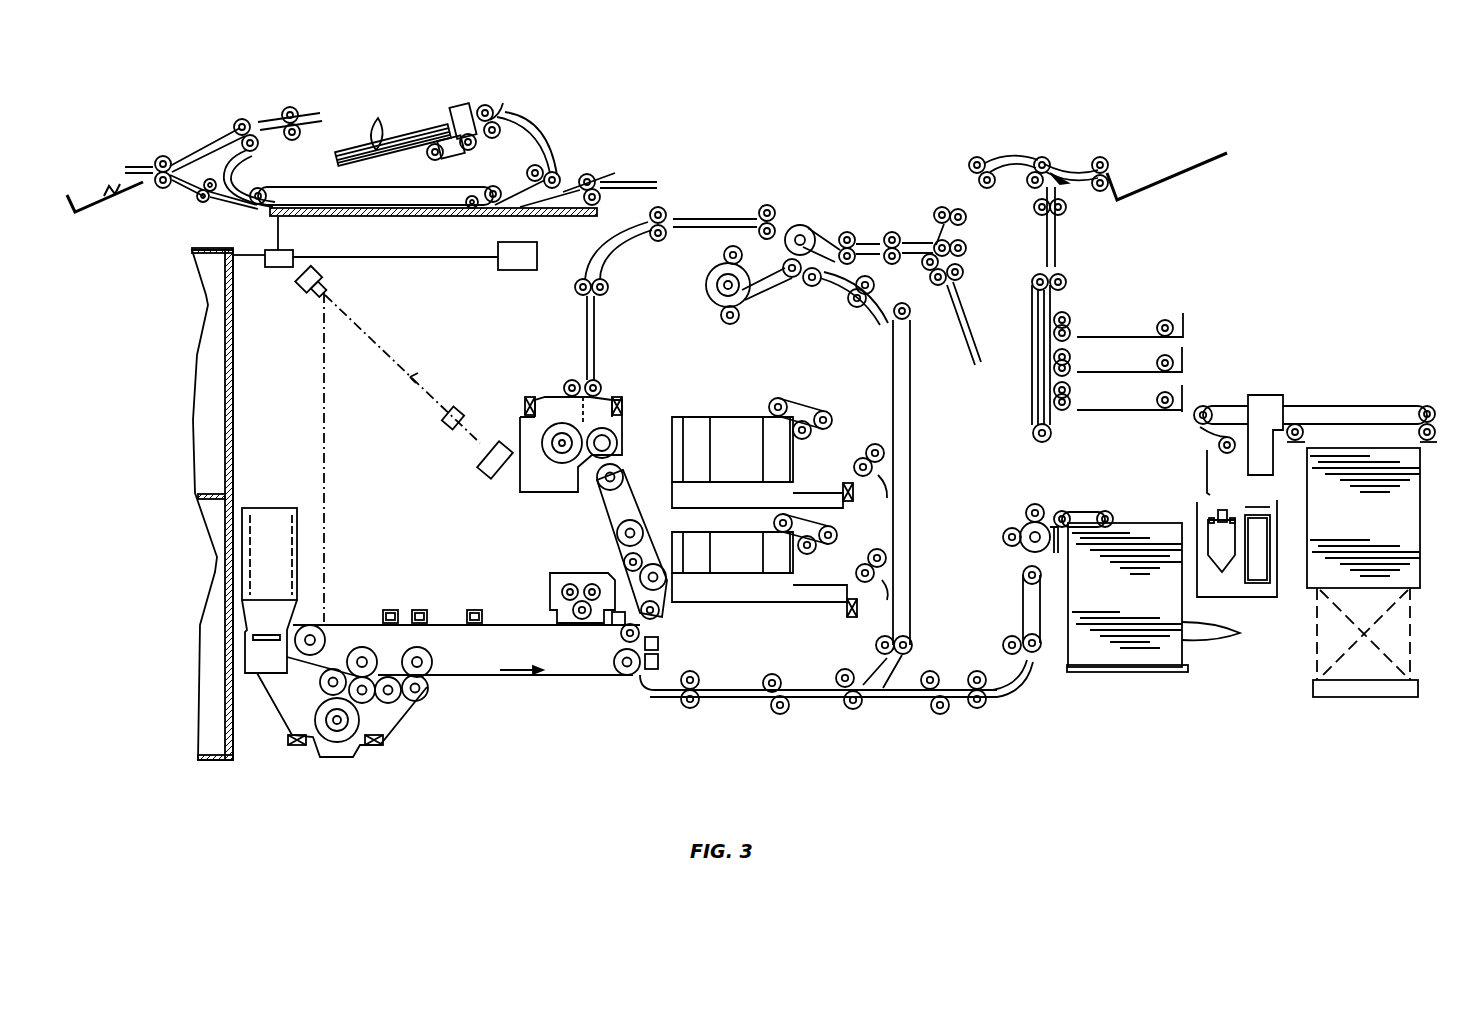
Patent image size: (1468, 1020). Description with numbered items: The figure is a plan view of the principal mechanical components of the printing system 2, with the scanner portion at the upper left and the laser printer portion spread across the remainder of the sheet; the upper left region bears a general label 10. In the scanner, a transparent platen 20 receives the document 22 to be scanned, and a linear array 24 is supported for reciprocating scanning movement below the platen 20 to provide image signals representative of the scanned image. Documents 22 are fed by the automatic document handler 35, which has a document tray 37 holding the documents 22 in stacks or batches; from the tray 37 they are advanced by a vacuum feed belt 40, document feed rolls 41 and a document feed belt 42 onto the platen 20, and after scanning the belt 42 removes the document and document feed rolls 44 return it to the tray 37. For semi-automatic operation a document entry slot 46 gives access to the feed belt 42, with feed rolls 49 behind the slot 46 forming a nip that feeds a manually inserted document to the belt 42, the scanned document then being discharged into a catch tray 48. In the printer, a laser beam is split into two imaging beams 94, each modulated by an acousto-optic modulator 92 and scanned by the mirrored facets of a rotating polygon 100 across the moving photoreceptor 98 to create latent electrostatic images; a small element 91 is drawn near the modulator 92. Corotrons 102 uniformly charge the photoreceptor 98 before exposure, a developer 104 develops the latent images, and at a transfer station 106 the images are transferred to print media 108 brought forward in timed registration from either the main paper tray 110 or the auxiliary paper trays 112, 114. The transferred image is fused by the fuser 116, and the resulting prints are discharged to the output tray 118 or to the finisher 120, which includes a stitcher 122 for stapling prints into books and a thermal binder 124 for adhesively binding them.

The printing system 2 is at (778, 132).
The sheet feeding section 10 is at (190, 140).
The transparent platen 20 is at (430, 217).
The document 22 is at (393, 130).
The linear array 24 is at (270, 247).
The automatic document handler 35 is at (396, 117).
The document tray 37 is at (377, 150).
The vacuum feed belt 40 is at (482, 142).
The document feed rolls 41 is at (503, 103).
The document feed belt 42 is at (437, 187).
The document feed rolls 44 is at (256, 143).
The document entry slot 46 is at (619, 177).
The catch tray 48 is at (143, 186).
The feed rolls 49 is at (597, 175).
The sensor 91 is at (492, 470).
The acousto-optic modulator 92 is at (457, 413).
The imaging beams 94 is at (410, 377).
The photoreceptor 98 is at (505, 623).
The rotating polygon 100 is at (312, 298).
The corotrons 102 is at (470, 608).
The developer 104 is at (407, 712).
The transfer station 106 is at (627, 696).
The print media 108 is at (1236, 634).
The main paper tray 110 is at (1107, 670).
The auxiliary paper tray 112 is at (727, 603).
The auxiliary paper tray 114 is at (727, 417).
The fuser 116 is at (633, 424).
The output tray 118 is at (1197, 167).
The finisher 120 is at (1235, 337).
The stitcher 122 is at (1182, 347).
The thermal binder 124 is at (1337, 396).